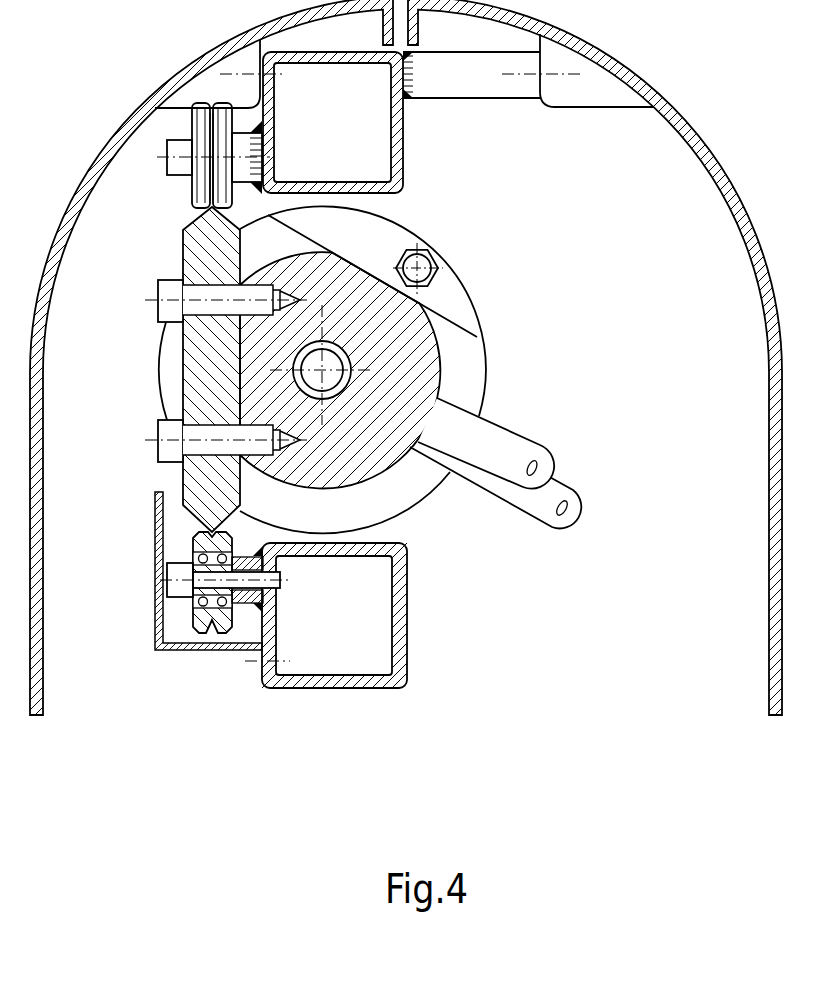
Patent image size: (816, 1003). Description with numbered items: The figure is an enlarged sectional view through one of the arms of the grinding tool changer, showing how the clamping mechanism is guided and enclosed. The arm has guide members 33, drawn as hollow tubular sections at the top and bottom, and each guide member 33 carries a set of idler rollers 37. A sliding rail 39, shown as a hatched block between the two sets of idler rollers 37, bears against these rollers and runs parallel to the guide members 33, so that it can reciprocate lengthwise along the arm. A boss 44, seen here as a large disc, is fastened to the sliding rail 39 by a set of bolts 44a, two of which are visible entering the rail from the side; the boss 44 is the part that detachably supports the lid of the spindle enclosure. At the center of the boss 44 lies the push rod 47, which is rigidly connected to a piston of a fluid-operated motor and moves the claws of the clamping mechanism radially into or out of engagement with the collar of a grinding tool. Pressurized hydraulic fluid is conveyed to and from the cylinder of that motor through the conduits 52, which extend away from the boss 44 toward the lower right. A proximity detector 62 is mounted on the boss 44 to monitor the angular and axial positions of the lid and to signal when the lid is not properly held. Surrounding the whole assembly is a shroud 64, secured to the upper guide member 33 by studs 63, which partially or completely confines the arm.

The guide member 33 is at (397, 153).
The idler roller 37 is at (205, 177).
The sliding rail 39 is at (202, 248).
The boss 44 is at (418, 362).
The bolt 44a is at (170, 308).
The push rod 47 is at (337, 383).
The conduit 52 is at (543, 497).
The proximity detector 62 is at (432, 250).
The stud 63 is at (487, 82).
The shroud 64 is at (705, 157).